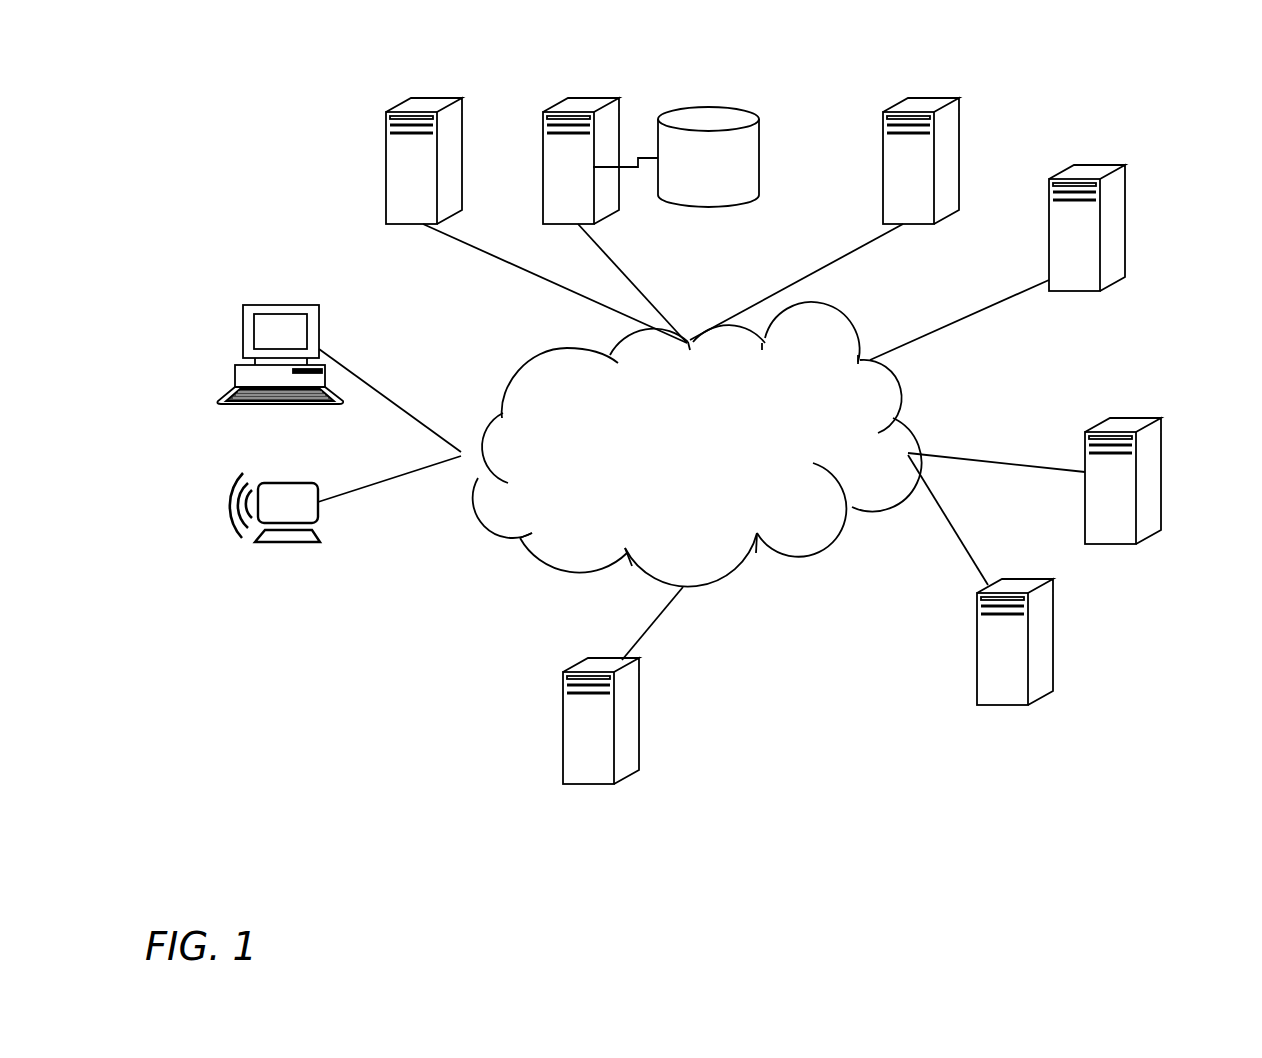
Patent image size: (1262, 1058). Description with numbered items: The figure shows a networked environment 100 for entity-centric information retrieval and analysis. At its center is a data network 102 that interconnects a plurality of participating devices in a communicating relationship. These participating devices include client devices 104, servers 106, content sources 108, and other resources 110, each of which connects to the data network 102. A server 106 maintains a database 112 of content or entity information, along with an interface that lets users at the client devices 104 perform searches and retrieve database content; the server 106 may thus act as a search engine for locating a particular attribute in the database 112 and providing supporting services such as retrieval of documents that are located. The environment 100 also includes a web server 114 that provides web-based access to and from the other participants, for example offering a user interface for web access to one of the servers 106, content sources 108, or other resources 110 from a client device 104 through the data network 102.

The environment 100 is at (196, 122).
The data network 102 is at (688, 462).
The client device 104 is at (225, 403).
The server 106 is at (386, 163).
The content source 108 is at (883, 165).
The other resource 110 is at (1161, 478).
The database 112 is at (727, 176).
The web server 114 is at (639, 723).